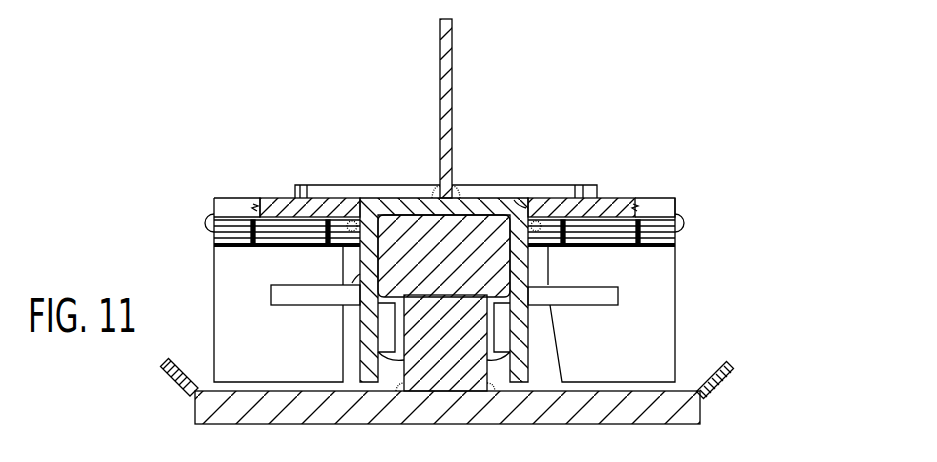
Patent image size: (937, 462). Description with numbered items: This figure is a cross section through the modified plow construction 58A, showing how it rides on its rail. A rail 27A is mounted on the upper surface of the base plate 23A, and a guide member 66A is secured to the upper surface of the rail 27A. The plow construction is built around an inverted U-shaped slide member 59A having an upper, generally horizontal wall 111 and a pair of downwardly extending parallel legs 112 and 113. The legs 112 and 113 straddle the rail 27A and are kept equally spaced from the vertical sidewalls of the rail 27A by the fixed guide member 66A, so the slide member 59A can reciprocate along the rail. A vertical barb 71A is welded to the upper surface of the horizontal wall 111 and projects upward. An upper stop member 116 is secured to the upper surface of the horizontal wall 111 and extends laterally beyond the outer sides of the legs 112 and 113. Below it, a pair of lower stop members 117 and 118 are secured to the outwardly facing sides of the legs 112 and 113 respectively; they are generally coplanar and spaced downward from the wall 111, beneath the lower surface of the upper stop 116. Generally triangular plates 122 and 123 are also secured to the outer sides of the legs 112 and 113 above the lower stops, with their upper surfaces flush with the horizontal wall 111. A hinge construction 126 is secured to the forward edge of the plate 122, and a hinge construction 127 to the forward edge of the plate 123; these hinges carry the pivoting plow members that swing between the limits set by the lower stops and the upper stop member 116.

The vertical barb 71A is at (452, 93).
The modified plow construction 58A is at (462, 205).
The triangularly shaped plate 122 is at (283, 208).
The upper stop member 116 is at (350, 192).
The horizontal wall 111 is at (413, 207).
The slide member 59A is at (476, 192).
The guide member 66A is at (520, 198).
The triangularly shaped plate 123 is at (622, 208).
The hinge construction 126 is at (228, 248).
The leg 112 is at (367, 262).
The leg 113 is at (522, 258).
The hinge construction 127 is at (652, 248).
The lower stop member 117 is at (313, 296).
The lower stop member 118 is at (592, 296).
The rail 27A is at (472, 339).
The base plate 23A is at (680, 404).